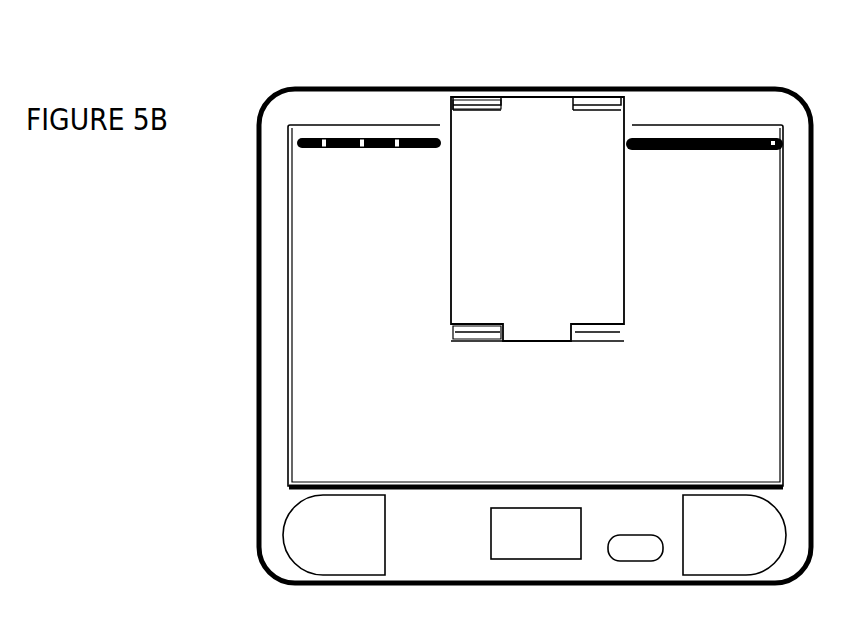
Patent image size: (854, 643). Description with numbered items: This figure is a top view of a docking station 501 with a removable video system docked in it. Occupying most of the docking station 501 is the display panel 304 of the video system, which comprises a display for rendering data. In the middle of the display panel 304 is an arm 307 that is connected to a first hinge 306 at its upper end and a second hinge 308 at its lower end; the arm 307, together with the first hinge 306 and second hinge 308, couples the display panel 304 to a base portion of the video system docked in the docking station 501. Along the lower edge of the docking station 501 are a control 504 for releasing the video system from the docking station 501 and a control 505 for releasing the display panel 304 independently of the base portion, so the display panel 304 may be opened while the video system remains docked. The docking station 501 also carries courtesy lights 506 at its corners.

The docking station 501 is at (256, 209).
The display panel 304 is at (328, 399).
The first hinge 306 is at (507, 96).
The arm 307 is at (540, 187).
The second hinge 308 is at (456, 335).
The control for releasing the video system 504 is at (622, 560).
The control for releasing the display panel 505 is at (520, 553).
The courtesy lights 506 is at (300, 548).